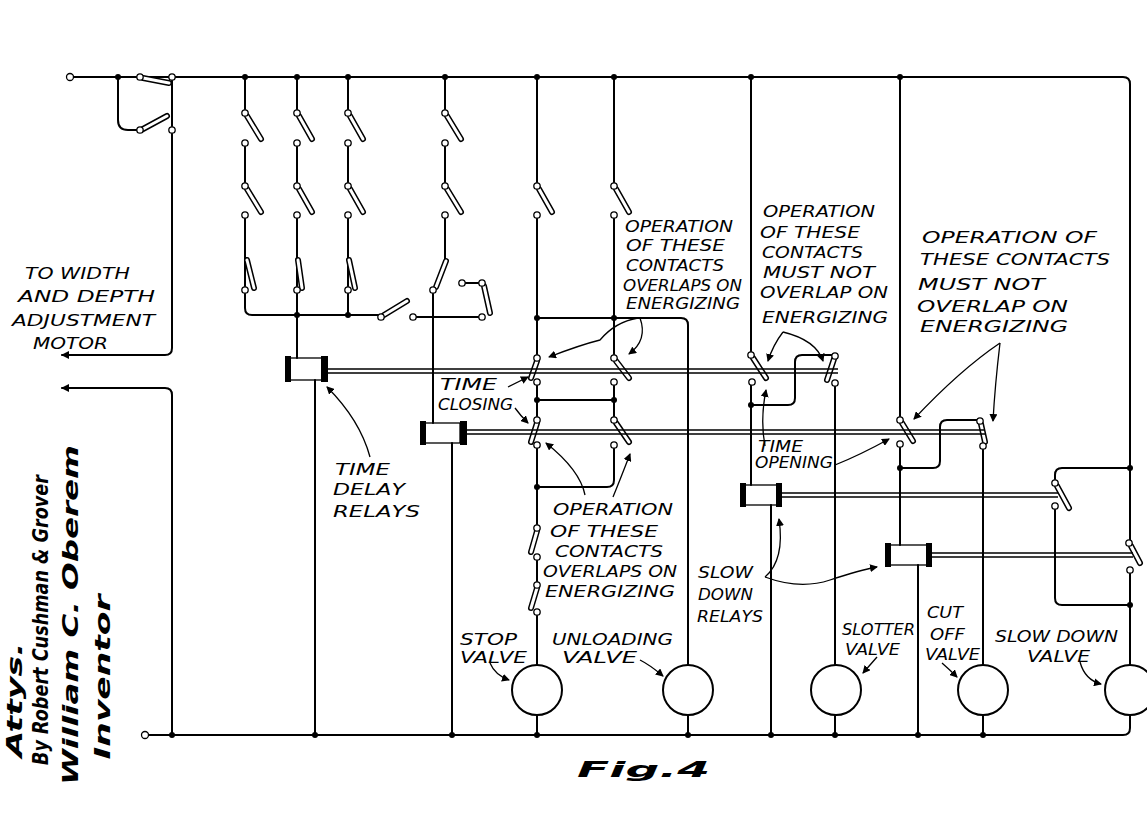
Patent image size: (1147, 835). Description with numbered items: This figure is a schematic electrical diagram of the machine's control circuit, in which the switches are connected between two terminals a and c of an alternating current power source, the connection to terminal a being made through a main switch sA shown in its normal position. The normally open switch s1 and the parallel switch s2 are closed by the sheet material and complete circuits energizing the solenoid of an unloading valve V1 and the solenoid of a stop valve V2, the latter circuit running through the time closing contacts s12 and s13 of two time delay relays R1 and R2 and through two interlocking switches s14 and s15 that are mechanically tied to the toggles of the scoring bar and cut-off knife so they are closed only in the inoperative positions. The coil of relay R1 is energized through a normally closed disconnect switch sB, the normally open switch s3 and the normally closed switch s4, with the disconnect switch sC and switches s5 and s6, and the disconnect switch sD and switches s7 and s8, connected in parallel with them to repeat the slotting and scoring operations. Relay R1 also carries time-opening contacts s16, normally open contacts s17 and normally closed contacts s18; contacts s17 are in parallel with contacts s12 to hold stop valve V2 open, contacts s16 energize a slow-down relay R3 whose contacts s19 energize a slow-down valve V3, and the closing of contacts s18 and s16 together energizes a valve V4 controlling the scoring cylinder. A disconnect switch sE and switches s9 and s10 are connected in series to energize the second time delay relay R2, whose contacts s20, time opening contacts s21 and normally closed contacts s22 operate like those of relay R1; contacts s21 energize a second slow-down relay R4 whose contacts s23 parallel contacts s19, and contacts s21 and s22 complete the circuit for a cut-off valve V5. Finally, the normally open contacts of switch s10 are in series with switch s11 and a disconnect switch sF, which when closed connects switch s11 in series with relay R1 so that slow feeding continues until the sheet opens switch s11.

The terminal a is at (67, 64).
The terminal c is at (139, 750).
The main switch sA is at (165, 86).
The disconnect switch sB is at (243, 126).
The disconnect switch sC is at (296, 124).
The disconnect switch sD is at (347, 124).
The disconnect switch sE is at (446, 125).
The disconnect switch sF is at (405, 322).
The switch s1 is at (546, 200).
The switch s2 is at (622, 204).
The switch s3 is at (250, 196).
The switch s4 is at (250, 276).
The switch s5 is at (296, 198).
The switch s6 is at (297, 272).
The switch s7 is at (348, 198).
The switch s8 is at (348, 272).
The switch s9 is at (449, 200).
The switch s10 is at (440, 274).
The switch s11 is at (490, 300).
The time closing contacts s12 is at (540, 380).
The time closing contacts s13 is at (528, 438).
The interlocking switch s14 is at (528, 542).
The interlocking switch s15 is at (528, 601).
The time-opening contacts s16 is at (748, 384).
The normally open contacts s17 is at (612, 359).
The normally closed contacts s18 is at (838, 368).
The contacts s19 is at (1067, 494).
The normally open contacts s20 is at (640, 414).
The time opening contacts s21 is at (897, 421).
The normally closed contacts s22 is at (988, 442).
The contacts s23 is at (1133, 567).
The time delay relay R1 is at (296, 385).
The time delay relay R2 is at (420, 418).
The slow-down relay R3 is at (757, 506).
The slow-down relay R4 is at (910, 549).
The unloading valve V1 is at (688, 690).
The stop valve V2 is at (537, 690).
The slow-down valve V3 is at (1126, 690).
The valve V4 is at (836, 690).
The cut-off valve V5 is at (983, 690).